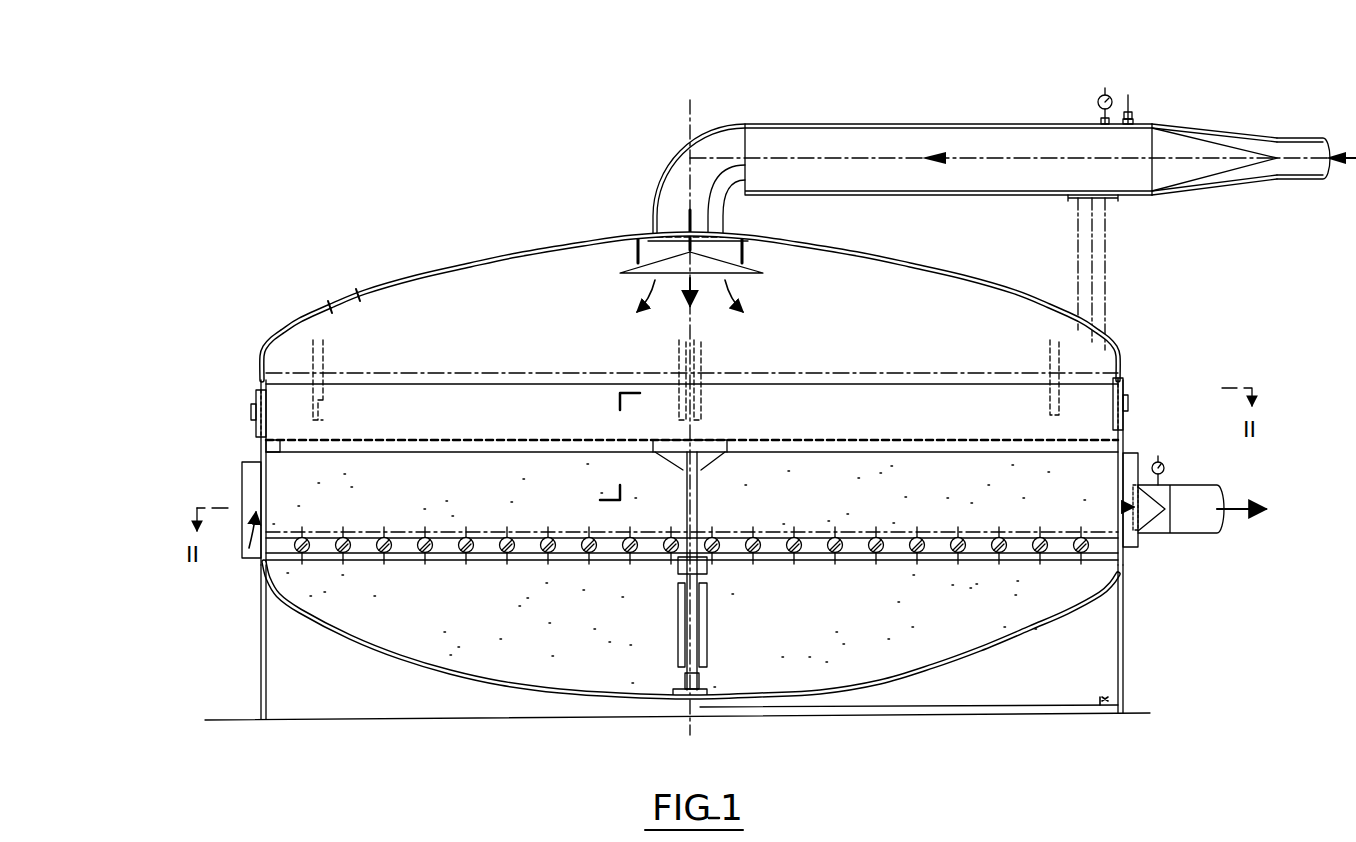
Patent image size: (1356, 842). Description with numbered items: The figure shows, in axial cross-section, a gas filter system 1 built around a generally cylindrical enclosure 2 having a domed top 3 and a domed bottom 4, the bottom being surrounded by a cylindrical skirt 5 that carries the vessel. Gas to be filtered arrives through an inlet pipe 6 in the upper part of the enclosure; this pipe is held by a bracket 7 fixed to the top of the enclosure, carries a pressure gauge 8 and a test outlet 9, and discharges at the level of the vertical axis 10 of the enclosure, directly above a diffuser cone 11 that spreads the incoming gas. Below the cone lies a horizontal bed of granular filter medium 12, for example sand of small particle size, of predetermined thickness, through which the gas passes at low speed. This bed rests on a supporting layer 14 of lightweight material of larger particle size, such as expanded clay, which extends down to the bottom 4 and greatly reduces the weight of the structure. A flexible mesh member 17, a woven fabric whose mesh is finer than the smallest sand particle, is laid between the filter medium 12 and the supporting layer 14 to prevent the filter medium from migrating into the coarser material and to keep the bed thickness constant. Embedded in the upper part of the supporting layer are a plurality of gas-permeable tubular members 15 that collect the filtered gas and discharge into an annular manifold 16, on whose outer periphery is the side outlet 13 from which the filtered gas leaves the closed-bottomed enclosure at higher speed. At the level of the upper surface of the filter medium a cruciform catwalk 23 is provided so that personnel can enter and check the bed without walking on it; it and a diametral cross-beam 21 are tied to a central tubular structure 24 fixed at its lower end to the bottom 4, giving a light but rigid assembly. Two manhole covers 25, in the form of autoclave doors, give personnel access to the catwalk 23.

The gas filter system 1 is at (713, 459).
The enclosure 2 is at (1132, 432).
The top 3 is at (945, 272).
The bottom 4 is at (858, 693).
The cylindrical skirt 5 is at (1124, 638).
The inlet pipe 6 is at (922, 122).
The bracket 7 is at (1107, 252).
The pressure gauge 8 is at (1096, 100).
The test outlet 9 is at (1135, 112).
The axis 10 is at (683, 124).
The diffuser cone 11 is at (740, 262).
The filter medium layer 12 is at (290, 483).
The side outlet 13 is at (1203, 533).
The supporting layer 14 is at (307, 593).
The tubular members 15 is at (340, 556).
The annular manifold 16 is at (1138, 462).
The flexible mesh member 17 is at (378, 532).
The diametral cross-beam 21 is at (942, 563).
The cruciform catwalk 23 is at (300, 441).
The central tubular structure 24 is at (681, 659).
The manhole covers 25 is at (256, 397).